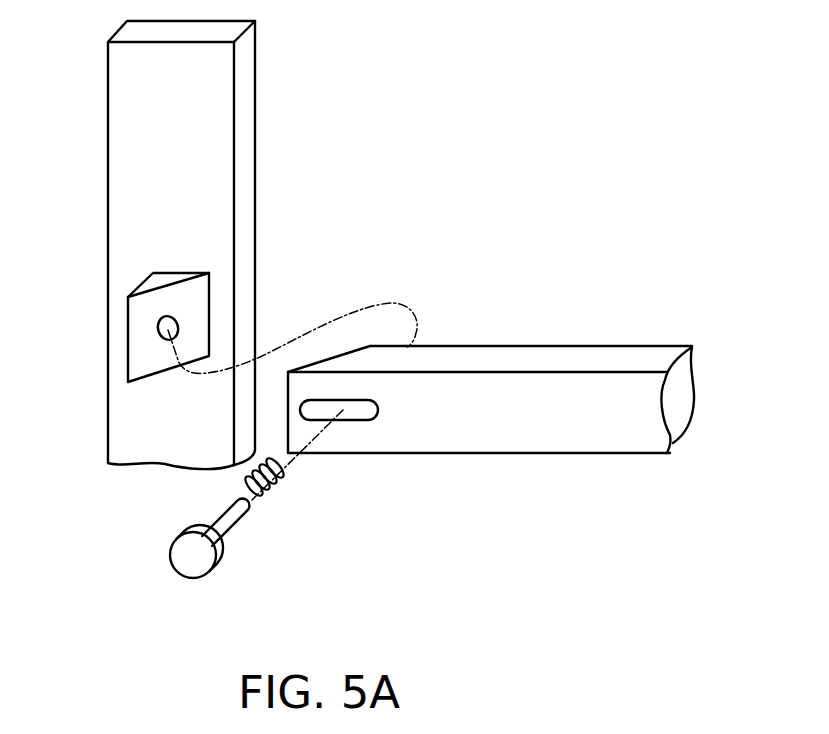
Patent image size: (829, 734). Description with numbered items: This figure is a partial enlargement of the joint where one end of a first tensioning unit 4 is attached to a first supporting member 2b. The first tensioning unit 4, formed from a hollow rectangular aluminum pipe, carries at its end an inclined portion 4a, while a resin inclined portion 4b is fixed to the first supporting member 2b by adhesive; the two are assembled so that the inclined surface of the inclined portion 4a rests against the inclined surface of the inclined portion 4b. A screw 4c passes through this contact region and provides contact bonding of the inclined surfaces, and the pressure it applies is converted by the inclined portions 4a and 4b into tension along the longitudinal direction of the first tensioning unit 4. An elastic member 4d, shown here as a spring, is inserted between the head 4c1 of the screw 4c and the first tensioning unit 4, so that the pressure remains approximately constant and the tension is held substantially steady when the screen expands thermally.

The first supporting member 2b is at (120, 141).
The first tensioning unit 4 is at (473, 438).
The inclined portion 4a is at (328, 358).
The inclined portion 4b is at (140, 350).
The screw 4c is at (237, 568).
The head 4c1 is at (193, 568).
The elastic member 4d is at (288, 480).